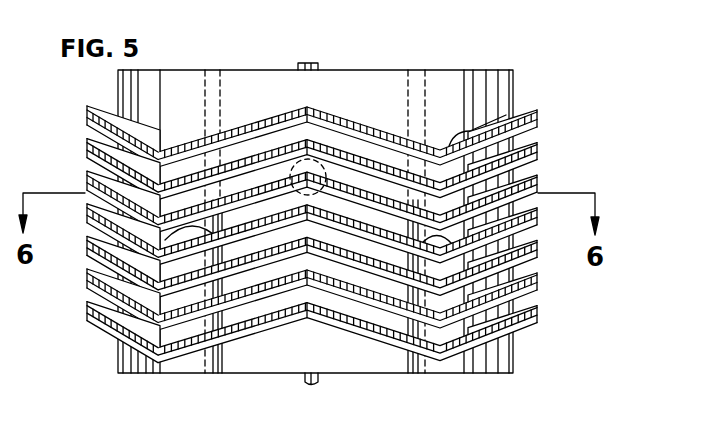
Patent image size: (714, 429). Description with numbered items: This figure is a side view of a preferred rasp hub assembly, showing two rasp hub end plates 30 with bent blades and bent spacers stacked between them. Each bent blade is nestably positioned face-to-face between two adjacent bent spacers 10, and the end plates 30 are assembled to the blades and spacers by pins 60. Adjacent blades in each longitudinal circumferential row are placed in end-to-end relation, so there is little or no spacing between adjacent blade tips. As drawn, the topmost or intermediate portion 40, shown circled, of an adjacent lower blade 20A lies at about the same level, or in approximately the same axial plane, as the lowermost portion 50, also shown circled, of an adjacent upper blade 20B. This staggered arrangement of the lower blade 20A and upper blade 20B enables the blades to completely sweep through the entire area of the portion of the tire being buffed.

The bent spacer 10 is at (424, 132).
The adjacent lower blade 20A is at (258, 184).
The adjacent upper blade 20B is at (233, 160).
The rasp hub end plate 30 is at (271, 111).
The intermediate portion 40 is at (310, 160).
The lowermost portion 50 is at (112, 136).
The pins 60 is at (208, 322).